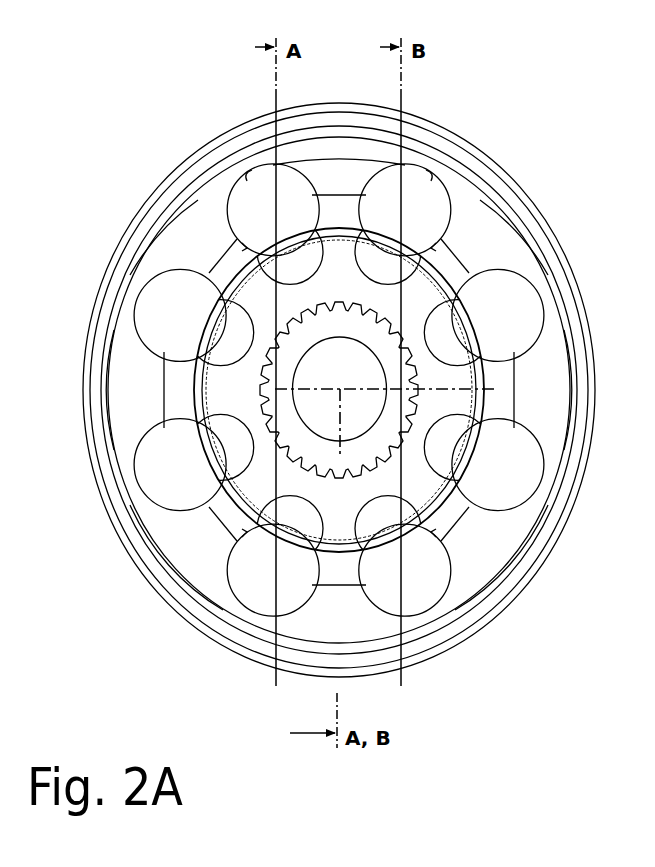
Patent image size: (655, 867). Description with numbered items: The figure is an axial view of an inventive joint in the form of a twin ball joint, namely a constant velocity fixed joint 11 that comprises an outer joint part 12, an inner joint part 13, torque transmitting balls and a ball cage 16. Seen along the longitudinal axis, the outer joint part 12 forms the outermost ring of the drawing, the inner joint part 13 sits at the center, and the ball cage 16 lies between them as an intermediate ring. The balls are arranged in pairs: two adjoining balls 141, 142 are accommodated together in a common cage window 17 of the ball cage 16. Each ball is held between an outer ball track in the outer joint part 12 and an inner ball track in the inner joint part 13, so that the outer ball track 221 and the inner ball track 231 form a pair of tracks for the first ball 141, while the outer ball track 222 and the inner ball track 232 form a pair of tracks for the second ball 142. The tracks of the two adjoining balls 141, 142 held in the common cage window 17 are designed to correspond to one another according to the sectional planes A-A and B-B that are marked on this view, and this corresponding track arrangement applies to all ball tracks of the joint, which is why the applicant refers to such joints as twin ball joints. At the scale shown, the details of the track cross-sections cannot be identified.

The constant velocity fixed joint 11 is at (108, 198).
The outer joint part 12 is at (492, 223).
The inner joint part 13 is at (450, 390).
The ball 141 is at (268, 162).
The ball 142 is at (419, 162).
The ball cage 16 is at (490, 313).
The cage window 17 is at (295, 187).
The outer ball track 221 is at (213, 134).
The outer ball track 222 is at (475, 135).
The inner ball track 231 is at (227, 205).
The inner ball track 232 is at (454, 205).